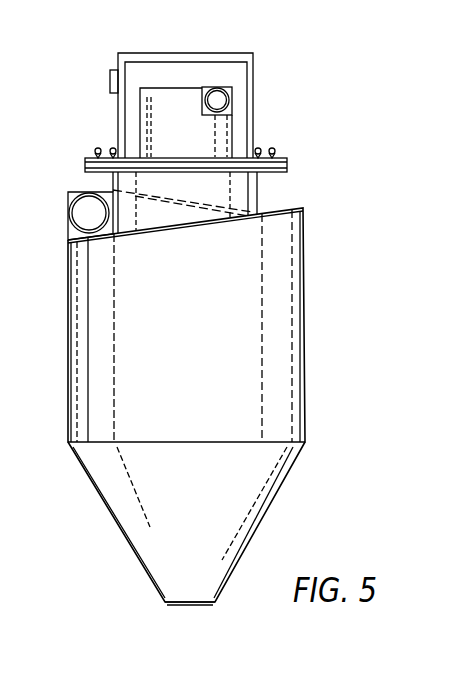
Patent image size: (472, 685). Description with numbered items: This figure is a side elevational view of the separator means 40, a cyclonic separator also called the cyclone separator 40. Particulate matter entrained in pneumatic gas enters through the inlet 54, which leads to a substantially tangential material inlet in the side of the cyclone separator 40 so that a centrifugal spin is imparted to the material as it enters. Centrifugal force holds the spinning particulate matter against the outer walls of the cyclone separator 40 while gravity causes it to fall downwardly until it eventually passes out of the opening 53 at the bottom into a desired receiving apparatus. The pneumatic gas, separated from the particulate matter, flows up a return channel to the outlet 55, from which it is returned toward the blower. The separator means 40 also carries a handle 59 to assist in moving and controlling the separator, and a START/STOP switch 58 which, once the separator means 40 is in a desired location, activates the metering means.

The separator means 40 is at (320, 357).
The opening 53 is at (182, 609).
The inlet 54 is at (85, 202).
The outlet 55 is at (220, 100).
The START/STOP switch 58 is at (112, 80).
The handle 59 is at (197, 53).